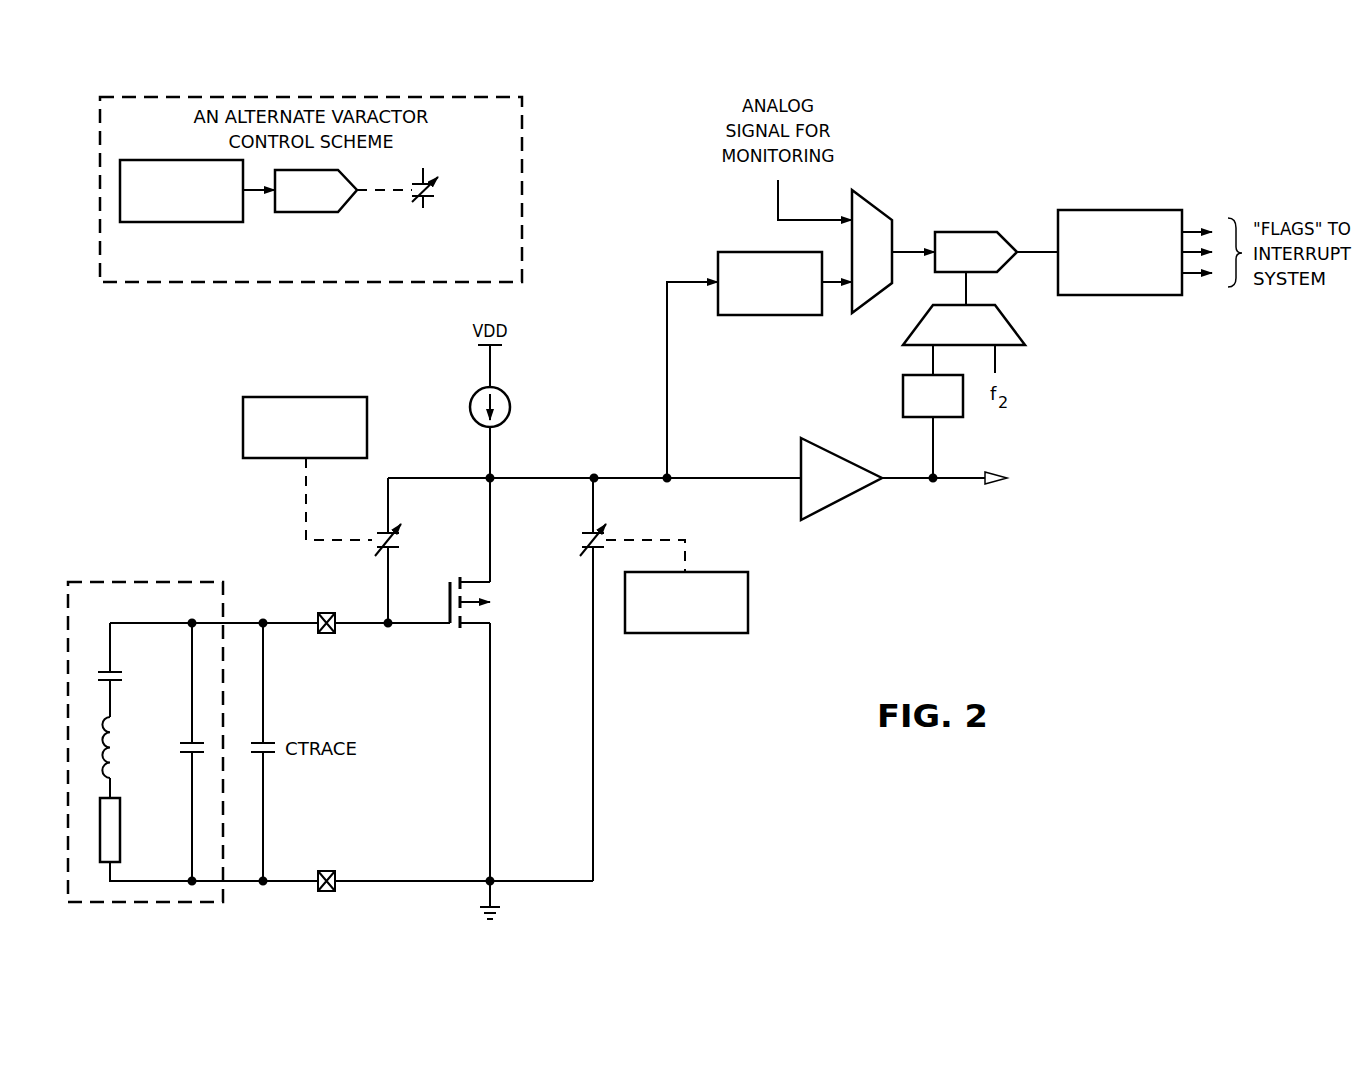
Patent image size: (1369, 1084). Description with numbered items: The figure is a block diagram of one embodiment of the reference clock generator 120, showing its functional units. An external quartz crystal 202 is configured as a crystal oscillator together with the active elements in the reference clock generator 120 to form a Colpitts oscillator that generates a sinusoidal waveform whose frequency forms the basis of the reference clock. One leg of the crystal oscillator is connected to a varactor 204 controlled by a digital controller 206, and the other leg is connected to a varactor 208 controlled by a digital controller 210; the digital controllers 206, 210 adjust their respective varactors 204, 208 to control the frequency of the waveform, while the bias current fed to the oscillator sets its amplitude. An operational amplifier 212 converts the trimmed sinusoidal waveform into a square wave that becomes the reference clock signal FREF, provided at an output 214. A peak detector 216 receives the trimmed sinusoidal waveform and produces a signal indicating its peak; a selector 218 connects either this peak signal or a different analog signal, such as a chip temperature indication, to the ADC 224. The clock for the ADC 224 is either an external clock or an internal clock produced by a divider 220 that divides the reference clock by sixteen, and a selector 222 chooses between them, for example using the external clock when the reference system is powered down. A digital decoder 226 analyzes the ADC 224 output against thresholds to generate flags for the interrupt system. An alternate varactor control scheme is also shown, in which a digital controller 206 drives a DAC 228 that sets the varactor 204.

The reference clock generator 120 is at (992, 627).
The external quartz crystal 202 is at (116, 578).
The varactor 204 is at (433, 190).
The digital controller 206 is at (181, 222).
The varactor 208 is at (582, 542).
The digital controller 210 is at (748, 608).
The operational amplifier (FBUF) 212 is at (845, 503).
The output 214 is at (990, 486).
The peak detector 216 is at (768, 315).
The selector 218 is at (872, 206).
The divider 220 is at (903, 395).
The selector 222 is at (1015, 323).
The ADC 224 is at (985, 232).
The digital decoder 226 is at (1120, 210).
The digital-to-analog converter (DAC) 228 is at (318, 212).